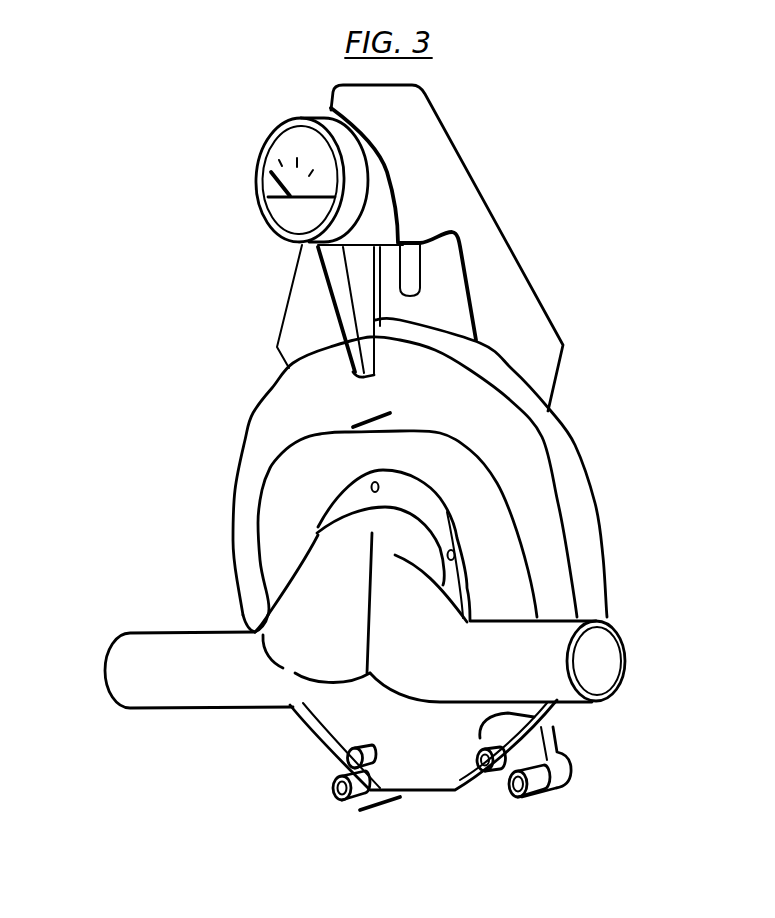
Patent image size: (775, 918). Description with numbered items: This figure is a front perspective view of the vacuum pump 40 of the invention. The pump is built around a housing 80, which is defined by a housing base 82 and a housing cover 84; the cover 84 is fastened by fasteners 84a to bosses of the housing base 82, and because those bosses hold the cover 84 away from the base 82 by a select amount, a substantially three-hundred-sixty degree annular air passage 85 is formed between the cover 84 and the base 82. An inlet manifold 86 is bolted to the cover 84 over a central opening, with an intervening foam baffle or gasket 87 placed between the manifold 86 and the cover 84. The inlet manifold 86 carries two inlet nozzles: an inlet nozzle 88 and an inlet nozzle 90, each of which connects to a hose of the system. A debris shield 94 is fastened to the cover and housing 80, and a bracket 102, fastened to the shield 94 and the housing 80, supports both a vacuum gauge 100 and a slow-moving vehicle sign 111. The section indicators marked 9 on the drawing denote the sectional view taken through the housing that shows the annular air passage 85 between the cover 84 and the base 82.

The vacuum gauge 100 is at (290, 147).
The bracket 102 is at (313, 260).
The slow-moving vehicle sign 111 is at (510, 283).
The debris shield 94 is at (546, 428).
The vacuum pump 40 is at (603, 433).
The foam baffle or gasket 87 is at (450, 541).
The inlet nozzle 90 is at (552, 640).
The inlet manifold 86 is at (625, 655).
The inlet nozzle 88 is at (122, 643).
The housing cover 84 is at (333, 710).
The fasteners 84a is at (340, 765).
The housing base 82 is at (550, 783).
The annular air passage 85 is at (553, 727).
The housing 80 is at (565, 716).
The section line 9- 9 is at (370, 417).